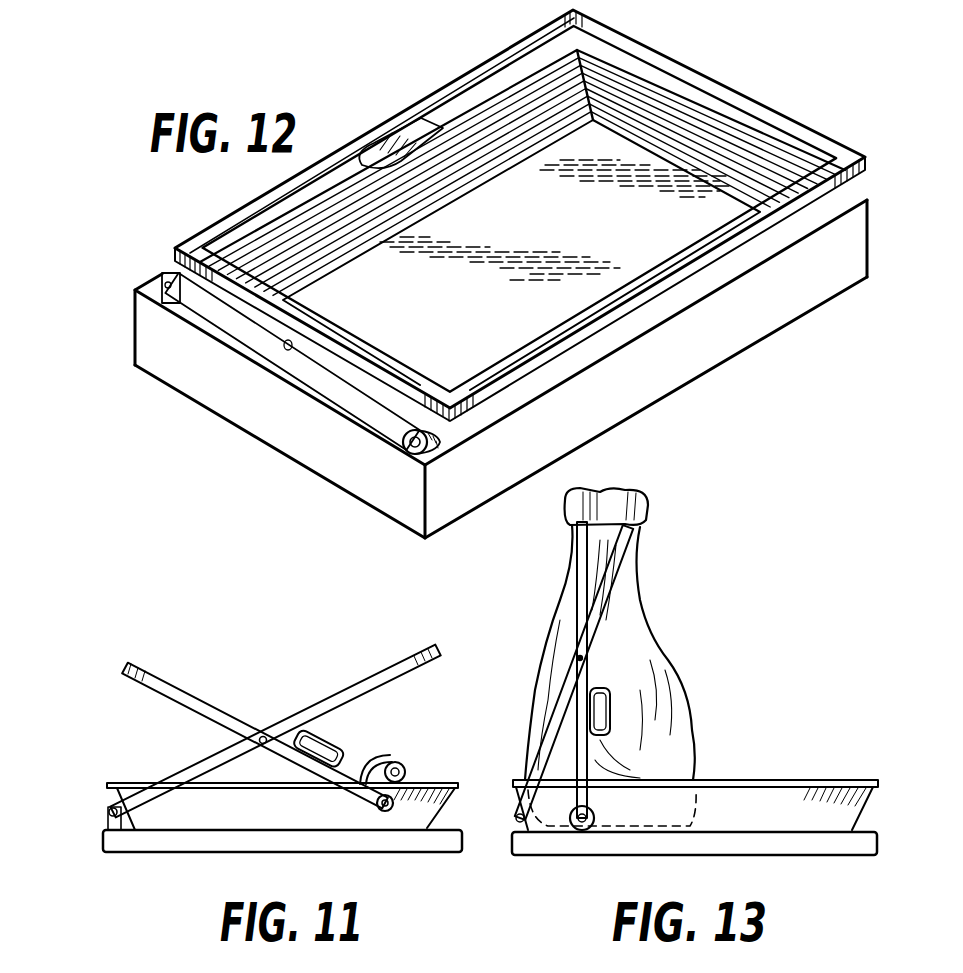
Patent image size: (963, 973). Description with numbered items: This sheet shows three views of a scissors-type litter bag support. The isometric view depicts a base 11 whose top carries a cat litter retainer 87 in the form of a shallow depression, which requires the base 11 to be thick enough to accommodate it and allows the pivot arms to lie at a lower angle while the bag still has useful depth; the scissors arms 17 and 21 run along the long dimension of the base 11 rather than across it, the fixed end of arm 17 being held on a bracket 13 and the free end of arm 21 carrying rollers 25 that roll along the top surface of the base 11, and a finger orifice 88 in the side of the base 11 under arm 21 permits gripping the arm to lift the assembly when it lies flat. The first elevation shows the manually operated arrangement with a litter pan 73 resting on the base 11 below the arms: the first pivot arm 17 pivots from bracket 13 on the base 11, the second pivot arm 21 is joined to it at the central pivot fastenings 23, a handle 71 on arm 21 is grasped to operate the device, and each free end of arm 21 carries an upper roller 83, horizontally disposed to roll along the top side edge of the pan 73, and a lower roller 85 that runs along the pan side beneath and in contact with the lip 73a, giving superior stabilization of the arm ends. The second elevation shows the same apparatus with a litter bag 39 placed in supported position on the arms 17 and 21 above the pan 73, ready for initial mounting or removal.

In FIG. 12, the base 11 is at (742, 340).
In FIG. 11, the base 11 is at (392, 840).
In FIG. 11, the bracket 13 is at (108, 820).
In FIG. 12, the first pivot arm 17 is at (860, 147).
In FIG. 11, the first pivot arm 17 is at (387, 667).
In FIG. 13, the first pivot arm 17 is at (618, 565).
In FIG. 12, the second pivot arm 21 is at (430, 97).
In FIG. 11, the second pivot arm 21 is at (162, 680).
In FIG. 13, the second pivot arm 21 is at (575, 575).
In FIG. 11, the second pivot fastenings 23 is at (288, 717).
In FIG. 12, the anti-friction wheels or rollers 25 is at (393, 443).
In FIG. 13, the anti-friction wheels or rollers 25 is at (593, 815).
In FIG. 13, the litter bag 39 is at (693, 710).
In FIG. 11, the handle 71 is at (325, 738).
In FIG. 13, the handle 71 is at (610, 712).
In FIG. 11, the litter pan 73 is at (268, 824).
In FIG. 13, the litter pan 73 is at (758, 787).
In FIG. 11, the lip 73a is at (460, 787).
In FIG. 11, the upper roller 83 is at (408, 767).
In FIG. 11, the lower roller 85 is at (375, 810).
In FIG. 12, the cat litter retainer 87 is at (580, 238).
In FIG. 12, the finger orifice 88 is at (405, 172).